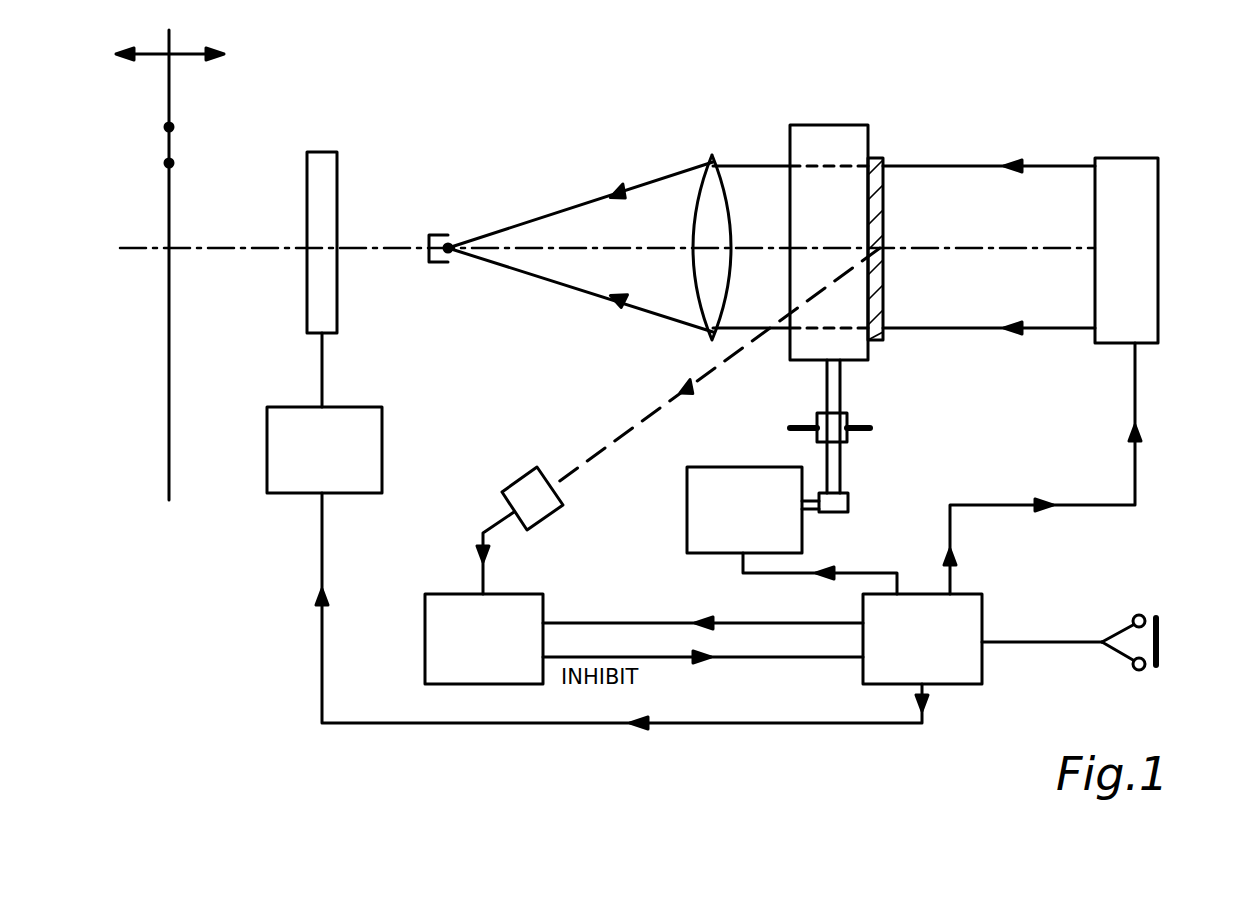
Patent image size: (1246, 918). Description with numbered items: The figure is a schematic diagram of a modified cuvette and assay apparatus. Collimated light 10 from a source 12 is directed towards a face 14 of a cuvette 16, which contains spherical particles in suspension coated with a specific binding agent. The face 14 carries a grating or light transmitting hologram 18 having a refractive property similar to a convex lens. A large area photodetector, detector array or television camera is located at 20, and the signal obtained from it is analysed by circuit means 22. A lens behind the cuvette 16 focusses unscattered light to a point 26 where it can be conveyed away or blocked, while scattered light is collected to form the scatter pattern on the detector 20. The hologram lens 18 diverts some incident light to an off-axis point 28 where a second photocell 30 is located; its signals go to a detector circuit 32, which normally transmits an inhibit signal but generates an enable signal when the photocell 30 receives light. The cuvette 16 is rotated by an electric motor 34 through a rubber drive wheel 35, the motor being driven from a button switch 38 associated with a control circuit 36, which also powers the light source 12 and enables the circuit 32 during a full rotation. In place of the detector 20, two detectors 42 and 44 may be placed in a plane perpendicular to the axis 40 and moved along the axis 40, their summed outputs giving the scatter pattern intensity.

The collimated light 10 is at (1036, 314).
The source 12 is at (1141, 252).
The face 14 is at (866, 148).
The cuvette 16 is at (866, 372).
The grating or light transmitting hologram 18 is at (884, 205).
The large area photodetector 20 is at (330, 187).
The circuit means 22 is at (340, 462).
The point 26 is at (448, 248).
The off-axis point 28 is at (557, 485).
The second photocell 30 is at (547, 512).
The detector circuit 32 is at (497, 657).
The electric motor 34 is at (762, 527).
The rubber drive wheel 35 is at (836, 477).
The control circuit 36 is at (938, 657).
The button switch 38 is at (1161, 645).
The axis 40 is at (608, 248).
The detector 42 is at (169, 127).
The detector 44 is at (169, 163).